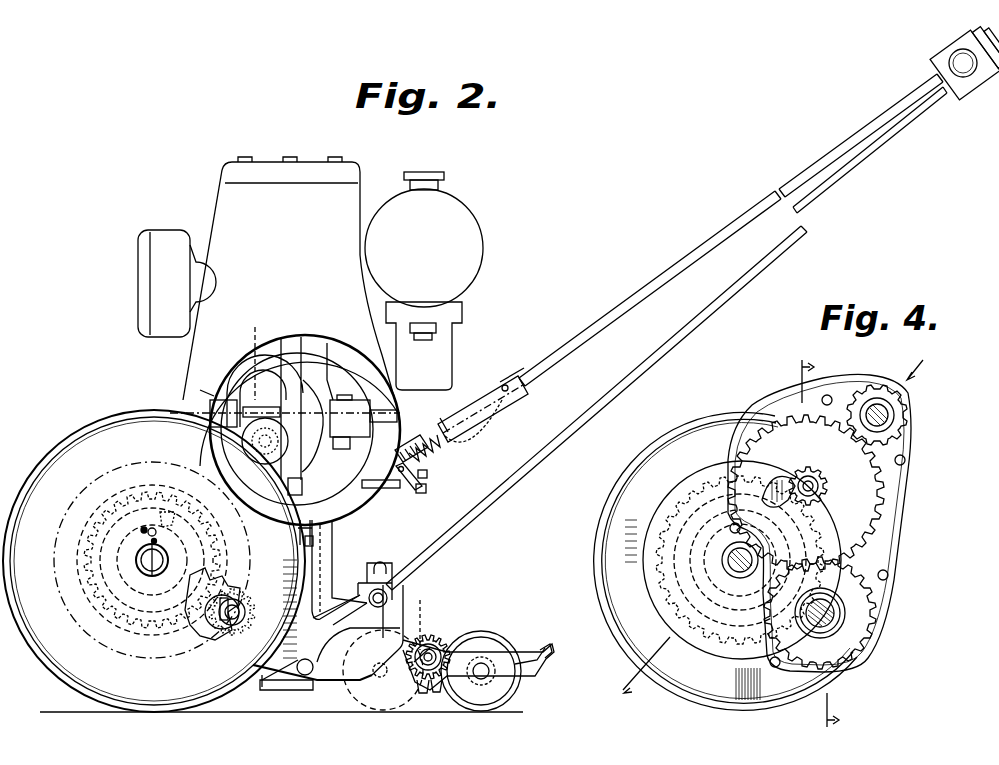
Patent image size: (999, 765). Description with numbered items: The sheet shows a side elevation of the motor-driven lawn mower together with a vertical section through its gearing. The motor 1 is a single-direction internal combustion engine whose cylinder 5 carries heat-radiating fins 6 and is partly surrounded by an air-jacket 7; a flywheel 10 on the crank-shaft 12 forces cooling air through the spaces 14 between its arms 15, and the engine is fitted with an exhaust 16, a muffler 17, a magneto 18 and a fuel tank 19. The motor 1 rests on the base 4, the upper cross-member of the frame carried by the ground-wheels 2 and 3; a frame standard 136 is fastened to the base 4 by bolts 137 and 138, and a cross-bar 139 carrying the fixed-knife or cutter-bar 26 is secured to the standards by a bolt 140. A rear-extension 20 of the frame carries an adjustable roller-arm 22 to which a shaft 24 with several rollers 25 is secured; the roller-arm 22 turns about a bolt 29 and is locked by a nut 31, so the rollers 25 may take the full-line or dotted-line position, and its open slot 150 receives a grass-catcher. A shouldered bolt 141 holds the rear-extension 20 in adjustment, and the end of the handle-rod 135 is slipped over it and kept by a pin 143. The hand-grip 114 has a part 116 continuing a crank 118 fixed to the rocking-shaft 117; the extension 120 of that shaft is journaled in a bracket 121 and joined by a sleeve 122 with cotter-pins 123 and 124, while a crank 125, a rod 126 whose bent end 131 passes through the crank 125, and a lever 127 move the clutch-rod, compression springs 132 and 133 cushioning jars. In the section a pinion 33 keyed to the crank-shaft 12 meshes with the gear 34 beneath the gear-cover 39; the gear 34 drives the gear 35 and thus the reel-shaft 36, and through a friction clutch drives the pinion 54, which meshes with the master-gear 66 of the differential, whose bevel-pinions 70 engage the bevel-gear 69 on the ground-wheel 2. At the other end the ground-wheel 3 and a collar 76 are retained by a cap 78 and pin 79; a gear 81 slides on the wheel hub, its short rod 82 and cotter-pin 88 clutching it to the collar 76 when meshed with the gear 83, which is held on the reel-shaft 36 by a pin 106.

In FIG. 2, the motor 1 is at (230, 178).
In FIG. 4, the ground-wheel 2 is at (688, 424).
In FIG. 2, the ground-wheel 3 is at (60, 448).
In FIG. 2, the base 4 is at (312, 532).
In FIG. 2, the cylinder 5 is at (324, 378).
In FIG. 4, the cylinder 5 is at (780, 524).
In FIG. 4, the heat-radiating fins 6 is at (817, 546).
In FIG. 2, the air-jacket 7 is at (228, 203).
In FIG. 2, the flywheel 10 is at (320, 314).
In FIG. 4, the crank-shaft 12 is at (890, 415).
In FIG. 2, the spaces 14 is at (236, 380).
In FIG. 2, the arms 15 is at (292, 340).
In FIG. 2, the exhaust 16 is at (200, 282).
In FIG. 2, the muffler 17 is at (160, 238).
In FIG. 2, the magneto 18 is at (205, 392).
In FIG. 2, the fuel tank 19 is at (478, 240).
In FIG. 2, the rear-extension 20 is at (428, 622).
In FIG. 2, the roller-arm 22 is at (540, 672).
In FIG. 2, the shaft 24 is at (478, 682).
In FIG. 2, the rollers 25 is at (498, 634).
In FIG. 2, the fixed-knife or cutter-bar 26 is at (292, 692).
In FIG. 2, the bolt 29 is at (432, 645).
In FIG. 2, the nut 31 is at (414, 668).
In FIG. 4, the pinion 33 is at (900, 420).
In FIG. 4, the gear 34 is at (862, 503).
In FIG. 4, the gear 35 is at (862, 596).
In FIG. 2, the reel-shaft 36 is at (222, 622).
In FIG. 4, the reel-shaft 36 is at (834, 618).
In FIG. 4, the gear-cover 39 is at (845, 388).
In FIG. 4, the pinion 54 is at (814, 466).
In FIG. 4, the master-gear 66 is at (786, 480).
In FIG. 4, the bevel-gear 69 is at (660, 614).
In FIG. 4, the bevel-pinions 70 is at (782, 522).
In FIG. 2, the collar 76 is at (152, 560).
In FIG. 2, the cap 78 is at (138, 568).
In FIG. 2, the pin 79 is at (150, 578).
In FIG. 2, the gear 81 is at (228, 574).
In FIG. 2, the short rod 82 is at (150, 528).
In FIG. 2, the gear 83 is at (232, 592).
In FIG. 2, the cotter-pin 88 is at (142, 532).
In FIG. 2, the pin 106 is at (245, 600).
In FIG. 2, the hand-grip 114 is at (950, 52).
In FIG. 2, the part of hand-grip 116 is at (970, 80).
In FIG. 2, the rocking-shaft 117 is at (640, 300).
In FIG. 2, the crank 118 is at (978, 70).
In FIG. 2, the extension 120 is at (468, 405).
In FIG. 2, the bracket 121 is at (460, 460).
In FIG. 2, the sleeve 122 is at (508, 380).
In FIG. 2, the cotter-pin 123 is at (510, 392).
In FIG. 2, the cotter-pin 124 is at (446, 420).
In FIG. 2, the crank 125 is at (406, 480).
In FIG. 2, the rod 126 is at (428, 476).
In FIG. 2, the lever 127 is at (376, 490).
In FIG. 2, the end of rod 131 is at (420, 494).
In FIG. 2, the spring 132 is at (400, 452).
In FIG. 2, the spring 133 is at (440, 450).
In FIG. 2, the handle-rod 135 is at (836, 170).
In FIG. 2, the end member or frame standard 136 is at (330, 620).
In FIG. 2, the bolt 137 is at (170, 510).
In FIG. 2, the bolt 138 is at (316, 546).
In FIG. 2, the cross-bar 139 is at (288, 690).
In FIG. 2, the bolt 140 is at (312, 688).
In FIG. 2, the shouldered bolt 141 is at (368, 610).
In FIG. 2, the pin 143 is at (390, 590).
In FIG. 2, the notches or open slots 150 is at (546, 662).